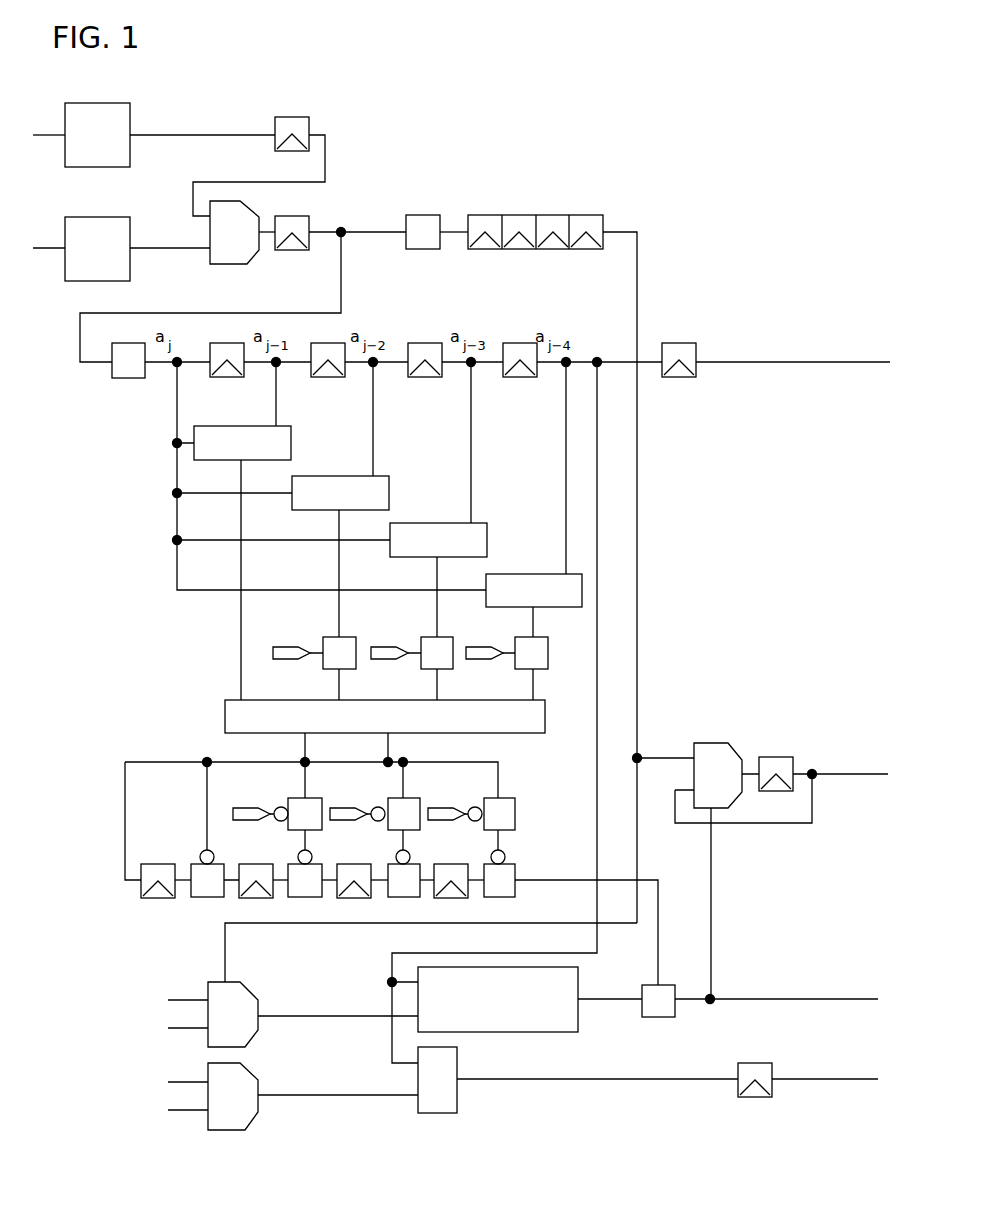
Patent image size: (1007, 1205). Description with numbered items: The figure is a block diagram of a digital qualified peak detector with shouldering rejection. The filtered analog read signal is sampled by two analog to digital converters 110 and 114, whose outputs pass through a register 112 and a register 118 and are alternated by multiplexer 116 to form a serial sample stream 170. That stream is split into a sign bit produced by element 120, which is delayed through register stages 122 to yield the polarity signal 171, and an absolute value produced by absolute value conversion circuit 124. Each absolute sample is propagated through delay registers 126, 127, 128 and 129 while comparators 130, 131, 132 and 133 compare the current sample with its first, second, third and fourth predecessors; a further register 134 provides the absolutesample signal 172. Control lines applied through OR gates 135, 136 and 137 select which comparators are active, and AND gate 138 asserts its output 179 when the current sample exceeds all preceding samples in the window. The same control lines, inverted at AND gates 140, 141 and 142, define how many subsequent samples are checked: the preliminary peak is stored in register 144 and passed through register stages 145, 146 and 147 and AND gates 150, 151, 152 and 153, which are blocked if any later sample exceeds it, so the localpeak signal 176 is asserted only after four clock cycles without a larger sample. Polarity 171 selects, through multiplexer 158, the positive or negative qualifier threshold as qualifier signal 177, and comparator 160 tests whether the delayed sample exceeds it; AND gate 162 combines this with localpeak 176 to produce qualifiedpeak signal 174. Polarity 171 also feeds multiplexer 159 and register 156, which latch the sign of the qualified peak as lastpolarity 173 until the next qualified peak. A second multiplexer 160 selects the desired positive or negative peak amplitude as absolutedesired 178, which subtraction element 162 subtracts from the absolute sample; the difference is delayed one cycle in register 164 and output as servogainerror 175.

The analog to digital converter 110 is at (93, 102).
The register 112 is at (288, 115).
The analog to digital converter 114 is at (98, 215).
The multiplexer 116 is at (210, 258).
The latch 118 is at (293, 253).
The sign bit element 120 is at (422, 250).
The polarity delay register 122 is at (520, 249).
The absolute value conversion circuit 124 is at (128, 379).
The delay register 126 is at (233, 380).
The delay register 127 is at (330, 380).
The delay register 128 is at (430, 380).
The delay register 129 is at (525, 380).
The comparator 130 is at (312, 437).
The comparator 131 is at (392, 493).
The comparator 132 is at (487, 533).
The comparator 133 is at (538, 558).
The latch 134 is at (687, 380).
The OR gate 135 is at (332, 672).
The OR gate 136 is at (430, 672).
The OR gate 137 is at (524, 672).
The AND gate 138 is at (525, 735).
The AND gate 140 is at (292, 832).
The AND gate 141 is at (390, 832).
The AND gate 142 is at (488, 832).
The register 144 is at (158, 898).
The latch 145 is at (257, 898).
The latch 146 is at (355, 898).
The latch 147 is at (447, 898).
The AND gate 150 is at (203, 898).
The AND gate 151 is at (300, 898).
The AND gate 152 is at (400, 898).
The AND gate 153 is at (500, 898).
The latch 156 is at (772, 757).
The multiplexer 158 is at (246, 985).
The polarity multiplexer 159 is at (708, 740).
The comparator 160 is at (255, 1058).
The AND gate 162 is at (663, 985).
The latch 164 is at (750, 1062).
The serial samples signal 170 is at (325, 238).
The polarity signal 171 is at (637, 258).
The absolutesample signal 172 is at (722, 360).
The last polarity signal 173 is at (835, 775).
The qualifiedpeak signal 174 is at (732, 997).
The servogainerror signal 175 is at (773, 1093).
The localpeak signal 176 is at (647, 877).
The qualifier signal 177 is at (345, 1017).
The absolute desired signal 178 is at (403, 1095).
The exceeds predecessors signal 179 is at (252, 763).